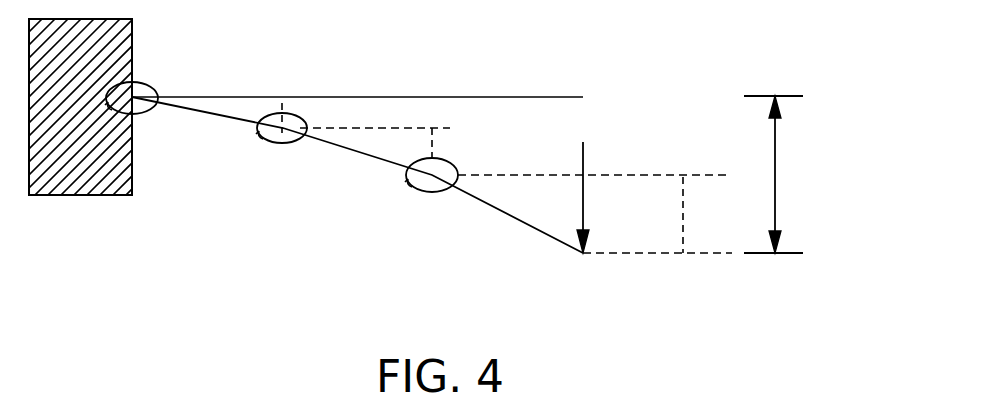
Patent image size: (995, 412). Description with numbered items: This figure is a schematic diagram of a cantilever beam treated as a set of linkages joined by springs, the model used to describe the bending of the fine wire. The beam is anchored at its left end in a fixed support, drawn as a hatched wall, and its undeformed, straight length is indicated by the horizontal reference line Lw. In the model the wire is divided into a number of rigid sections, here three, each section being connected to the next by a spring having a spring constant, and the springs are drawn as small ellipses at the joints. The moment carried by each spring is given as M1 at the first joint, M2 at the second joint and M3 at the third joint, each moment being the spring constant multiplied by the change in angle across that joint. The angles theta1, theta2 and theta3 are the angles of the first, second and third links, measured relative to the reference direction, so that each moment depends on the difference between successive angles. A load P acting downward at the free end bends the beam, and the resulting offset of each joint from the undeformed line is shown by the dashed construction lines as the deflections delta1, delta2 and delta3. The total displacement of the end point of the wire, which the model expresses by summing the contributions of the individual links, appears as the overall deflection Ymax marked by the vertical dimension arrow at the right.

The fixed support wall is at (165, 110).
The undeflected beam length Lw is at (357, 74).
The cantilever beam is at (357, 175).
The moment value of the first spring M1 is at (170, 78).
The moment value of the second spring M2 is at (226, 152).
The moment value of the third spring M3 is at (365, 196).
The angle of the first link theta1 is at (184, 131).
The angle of the second link theta2 is at (383, 144).
The angle of the third link theta3 is at (499, 191).
The first deflection delta1 is at (366, 131).
The second deflection delta2 is at (590, 157).
The third deflection delta3 is at (657, 215).
The applied load P is at (600, 197).
The maximum deflection Ymax is at (804, 174).